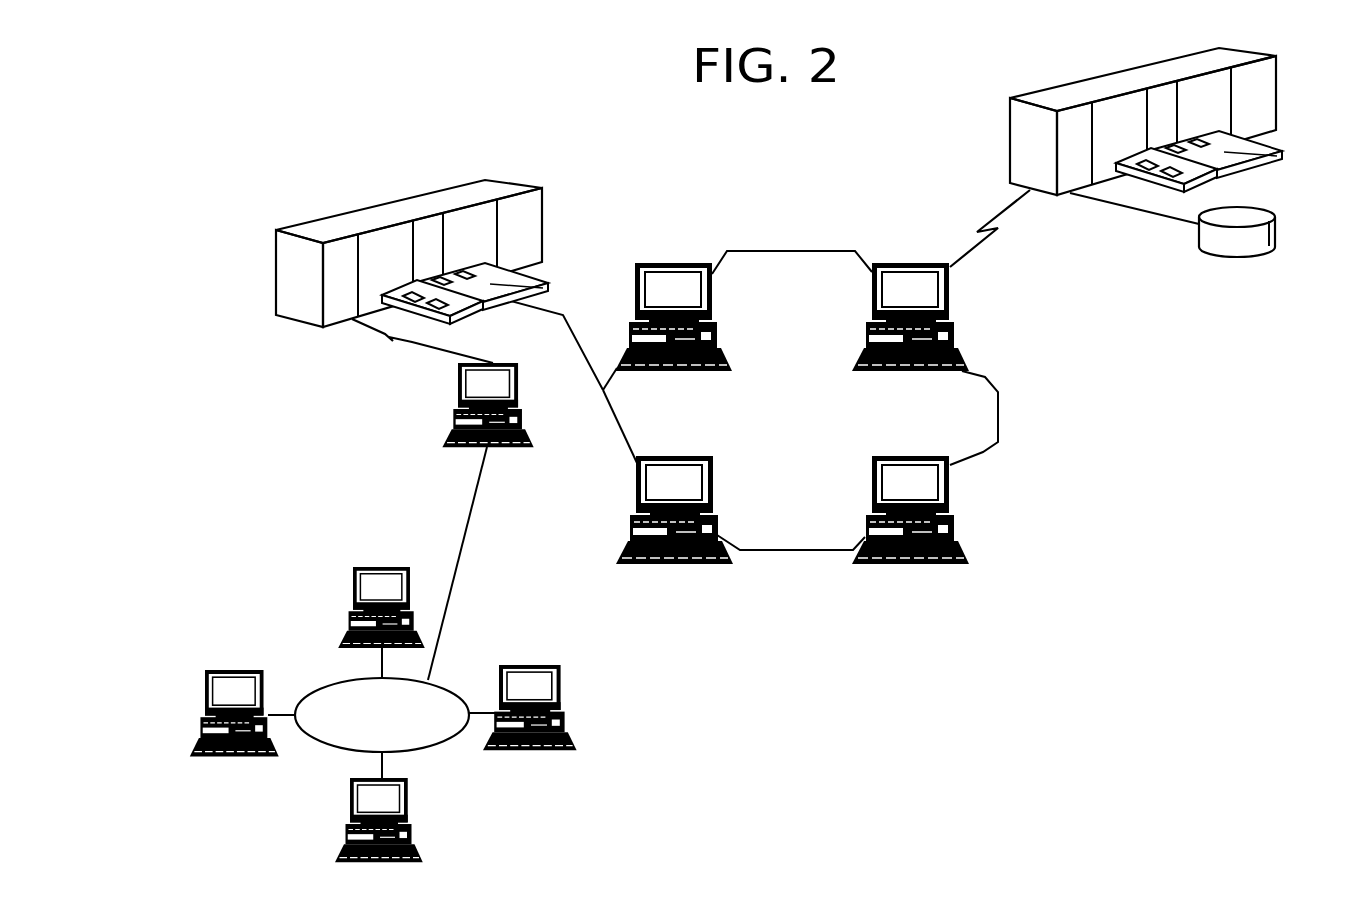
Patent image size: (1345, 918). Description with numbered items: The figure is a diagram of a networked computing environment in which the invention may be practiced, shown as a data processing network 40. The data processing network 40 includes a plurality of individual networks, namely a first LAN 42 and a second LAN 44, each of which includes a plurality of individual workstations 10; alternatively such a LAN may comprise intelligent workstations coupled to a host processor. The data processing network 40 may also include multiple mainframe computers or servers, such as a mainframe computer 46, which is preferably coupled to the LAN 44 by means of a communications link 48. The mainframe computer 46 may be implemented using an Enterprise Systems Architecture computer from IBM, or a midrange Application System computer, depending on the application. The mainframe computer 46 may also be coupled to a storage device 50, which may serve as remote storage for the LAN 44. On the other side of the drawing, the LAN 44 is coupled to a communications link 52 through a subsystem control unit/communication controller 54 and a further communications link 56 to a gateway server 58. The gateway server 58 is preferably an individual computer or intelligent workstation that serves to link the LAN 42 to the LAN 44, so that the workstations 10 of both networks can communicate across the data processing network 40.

The workstation 10 is at (668, 264).
The data processing network 40 is at (800, 227).
The LAN 42 is at (383, 624).
The LAN 44 is at (800, 400).
The mainframe computer 46 is at (1072, 83).
The communications link 48 is at (1003, 211).
The storage device 50 is at (1277, 222).
The communications link 52 is at (572, 332).
The subsystem control unit/communication controller 54 is at (415, 195).
The communications link 56 is at (381, 339).
The gateway server 58 is at (520, 377).